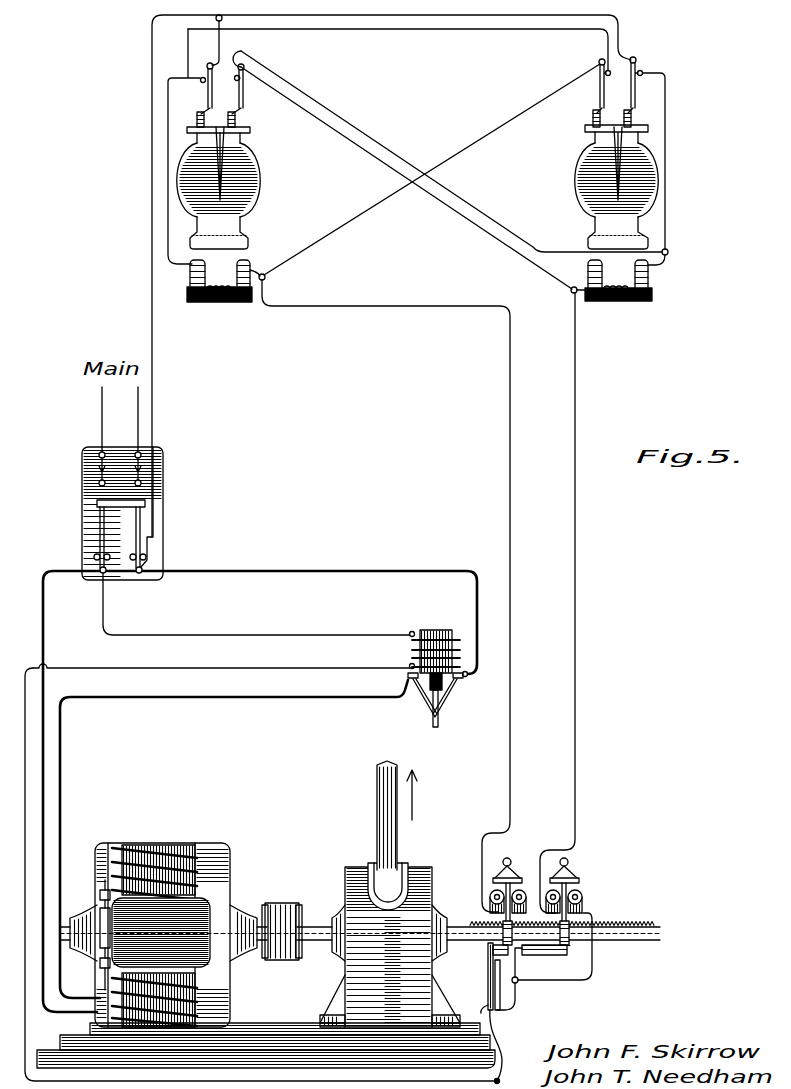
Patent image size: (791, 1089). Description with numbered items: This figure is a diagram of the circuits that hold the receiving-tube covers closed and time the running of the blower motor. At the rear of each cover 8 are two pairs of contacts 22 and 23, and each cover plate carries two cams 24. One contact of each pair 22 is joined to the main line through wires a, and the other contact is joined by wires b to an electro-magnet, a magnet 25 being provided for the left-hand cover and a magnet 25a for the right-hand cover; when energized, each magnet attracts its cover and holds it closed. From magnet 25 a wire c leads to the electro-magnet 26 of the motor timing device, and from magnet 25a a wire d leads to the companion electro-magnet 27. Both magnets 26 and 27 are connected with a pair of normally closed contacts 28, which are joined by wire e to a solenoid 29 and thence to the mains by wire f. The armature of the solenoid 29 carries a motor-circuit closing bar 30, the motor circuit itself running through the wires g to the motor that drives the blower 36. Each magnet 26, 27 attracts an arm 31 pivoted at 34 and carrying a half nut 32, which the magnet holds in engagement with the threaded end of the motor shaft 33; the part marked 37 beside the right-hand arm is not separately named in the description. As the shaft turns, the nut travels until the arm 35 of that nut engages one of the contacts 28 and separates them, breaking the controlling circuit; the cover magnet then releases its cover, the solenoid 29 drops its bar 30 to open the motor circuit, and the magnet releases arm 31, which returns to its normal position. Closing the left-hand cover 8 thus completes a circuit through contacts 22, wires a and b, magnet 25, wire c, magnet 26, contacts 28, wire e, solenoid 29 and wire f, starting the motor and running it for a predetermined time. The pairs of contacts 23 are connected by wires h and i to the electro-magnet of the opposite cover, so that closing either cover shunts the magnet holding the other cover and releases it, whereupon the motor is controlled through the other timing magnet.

The cover 8 is at (257, 195).
The pair of contacts 22 is at (203, 93).
The pair of contacts 23 is at (249, 101).
The cam 24 is at (190, 120).
The electro-magnet 25 is at (222, 306).
The electro-magnet 25a is at (628, 303).
The electro-magnet of motor timing device 26 is at (488, 897).
The electro-magnet of motor timing device 27 is at (585, 902).
The normally closed contacts 28 is at (485, 992).
The solenoid 29 is at (437, 627).
The motor circuit closing bar 30 is at (447, 712).
The arm 31 is at (510, 890).
The half nut 32 is at (503, 927).
The threaded shaft 33 is at (638, 941).
The pivot 34 is at (510, 861).
The arm 35 is at (493, 950).
The blower 36 is at (390, 894).
The armature 37 is at (578, 879).
The wires a is at (228, 45).
The wires b is at (160, 179).
The wire c is at (503, 421).
The wire d is at (582, 400).
The wire e is at (311, 672).
The wire f is at (183, 637).
The wires g is at (49, 633).
The wires h is at (382, 158).
The wires i is at (500, 29).